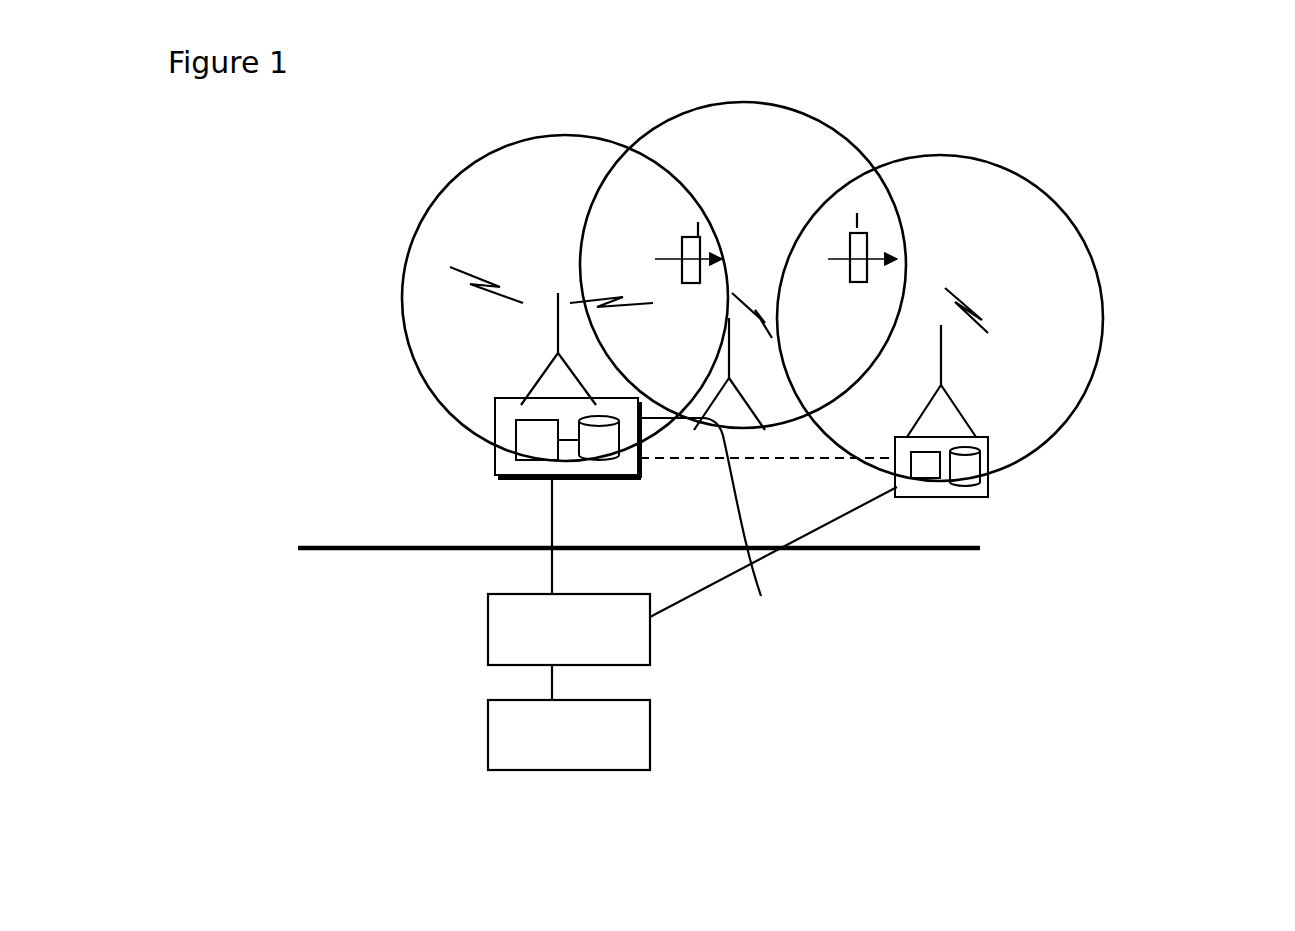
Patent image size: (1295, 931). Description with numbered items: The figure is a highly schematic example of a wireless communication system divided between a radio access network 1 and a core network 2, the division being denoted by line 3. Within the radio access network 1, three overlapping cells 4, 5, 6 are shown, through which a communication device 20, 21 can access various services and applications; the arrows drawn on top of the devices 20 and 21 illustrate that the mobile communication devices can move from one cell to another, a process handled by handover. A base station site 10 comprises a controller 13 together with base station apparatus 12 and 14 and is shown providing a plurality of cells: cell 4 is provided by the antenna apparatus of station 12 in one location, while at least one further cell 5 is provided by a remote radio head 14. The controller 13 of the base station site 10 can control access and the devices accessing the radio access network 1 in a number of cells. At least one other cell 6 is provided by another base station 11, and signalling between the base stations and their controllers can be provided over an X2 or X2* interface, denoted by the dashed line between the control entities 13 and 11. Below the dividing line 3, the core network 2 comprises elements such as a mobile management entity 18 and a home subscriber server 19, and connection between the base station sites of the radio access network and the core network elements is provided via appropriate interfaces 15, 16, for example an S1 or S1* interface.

The radio access network 1 is at (373, 262).
The core network 2 is at (937, 650).
The line 3 is at (975, 547).
The cell 4 is at (562, 225).
The cell 5 is at (762, 175).
The cell 6 is at (978, 218).
The base station site 10 is at (348, 410).
The base station 11 is at (985, 463).
The base station apparatus 12 is at (553, 348).
The controller 13 is at (495, 438).
The remote radio head 14 is at (711, 479).
The interface 15 is at (545, 520).
The interface 16 is at (707, 587).
The mobile management entity 18 is at (488, 643).
The home subscriber server 19 is at (488, 756).
The communication device 20 is at (678, 237).
The communication device 21 is at (850, 232).